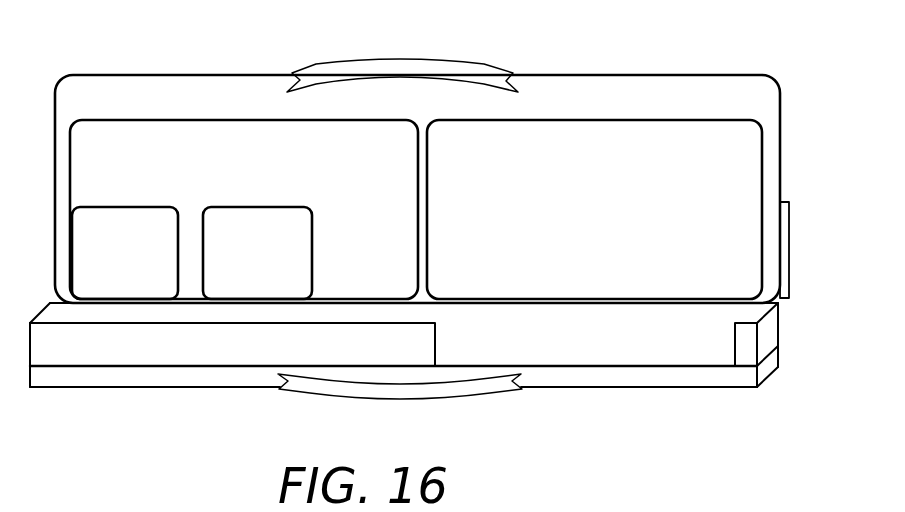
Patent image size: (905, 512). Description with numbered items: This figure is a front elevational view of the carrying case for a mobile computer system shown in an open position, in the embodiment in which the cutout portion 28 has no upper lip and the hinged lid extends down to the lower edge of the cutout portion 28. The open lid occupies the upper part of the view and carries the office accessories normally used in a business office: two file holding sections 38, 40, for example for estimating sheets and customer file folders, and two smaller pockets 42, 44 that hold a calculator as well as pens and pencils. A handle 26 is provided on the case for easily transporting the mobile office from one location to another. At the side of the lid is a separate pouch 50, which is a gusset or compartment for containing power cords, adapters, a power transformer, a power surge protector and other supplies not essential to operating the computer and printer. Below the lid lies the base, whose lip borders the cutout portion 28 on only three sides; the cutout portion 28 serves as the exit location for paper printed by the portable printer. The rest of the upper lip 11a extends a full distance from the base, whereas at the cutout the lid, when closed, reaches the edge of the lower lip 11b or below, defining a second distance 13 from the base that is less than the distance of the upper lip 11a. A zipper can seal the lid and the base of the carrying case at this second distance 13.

The second distance 13 is at (404, 379).
The upper lip 11a is at (197, 342).
The lower lip 11b is at (248, 378).
The handle 26 is at (436, 68).
The cutout portion 28 is at (680, 340).
The file holding section 38 is at (195, 140).
The file holding section 40 is at (653, 145).
The pocket 42 is at (136, 222).
The pocket 44 is at (260, 228).
The pouch 50 is at (790, 258).